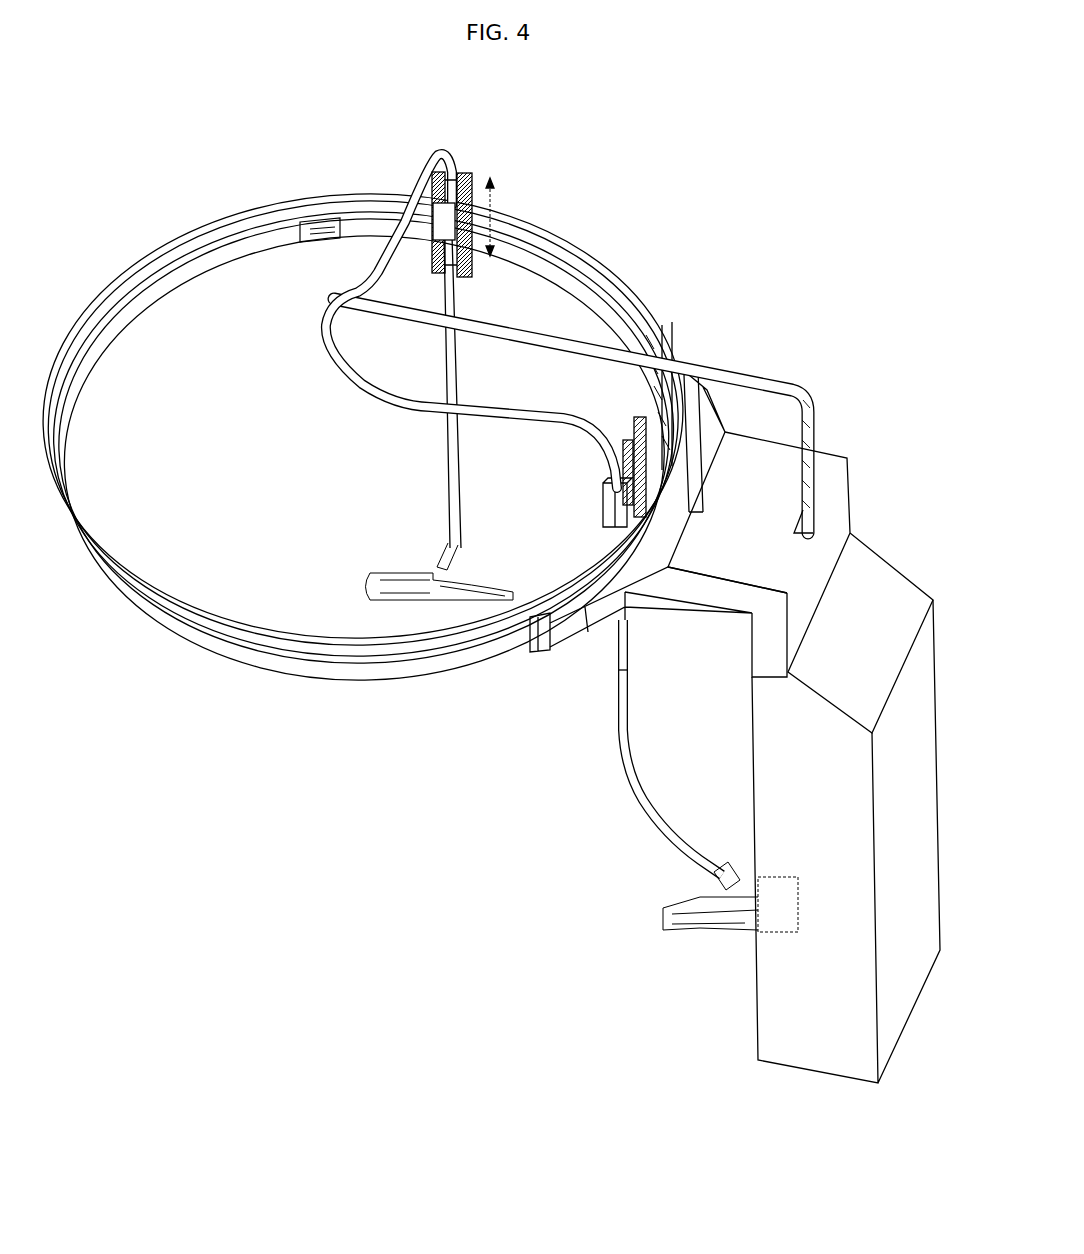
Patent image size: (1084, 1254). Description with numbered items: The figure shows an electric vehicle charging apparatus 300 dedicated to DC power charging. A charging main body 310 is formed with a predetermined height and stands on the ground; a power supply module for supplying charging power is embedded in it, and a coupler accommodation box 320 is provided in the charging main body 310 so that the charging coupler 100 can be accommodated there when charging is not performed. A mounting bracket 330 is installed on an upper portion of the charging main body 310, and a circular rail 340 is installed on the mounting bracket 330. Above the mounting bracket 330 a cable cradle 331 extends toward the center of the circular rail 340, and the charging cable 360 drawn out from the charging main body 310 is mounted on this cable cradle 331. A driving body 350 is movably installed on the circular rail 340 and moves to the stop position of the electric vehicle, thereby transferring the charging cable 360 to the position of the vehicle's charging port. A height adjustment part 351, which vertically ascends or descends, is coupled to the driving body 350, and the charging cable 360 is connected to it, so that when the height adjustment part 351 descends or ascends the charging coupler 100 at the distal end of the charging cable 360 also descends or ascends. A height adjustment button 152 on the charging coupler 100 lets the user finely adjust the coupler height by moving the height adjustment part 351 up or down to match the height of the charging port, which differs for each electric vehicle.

The electric vehicle charging apparatus 300 is at (871, 289).
The charging main body 310 is at (887, 572).
The coupler accommodation box 320 is at (798, 932).
The mounting bracket 330 is at (686, 596).
The cable cradle 331 is at (723, 366).
The circular rail 340 is at (191, 278).
The driving body 350 is at (467, 173).
The height adjustment part 351 is at (432, 238).
The charging cable 360 is at (443, 428).
The charging coupler 100 is at (391, 557).
The height adjustment button 152 is at (476, 565).